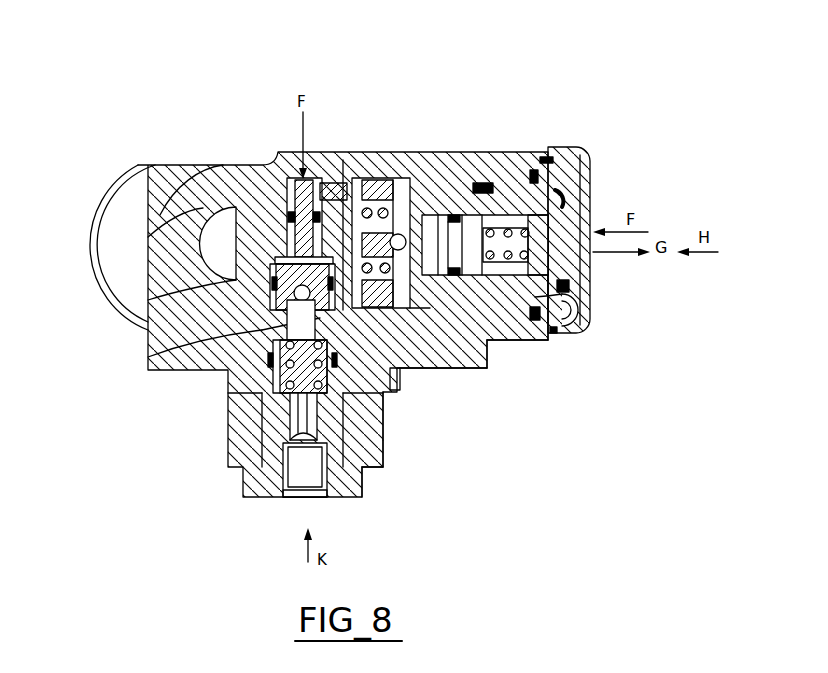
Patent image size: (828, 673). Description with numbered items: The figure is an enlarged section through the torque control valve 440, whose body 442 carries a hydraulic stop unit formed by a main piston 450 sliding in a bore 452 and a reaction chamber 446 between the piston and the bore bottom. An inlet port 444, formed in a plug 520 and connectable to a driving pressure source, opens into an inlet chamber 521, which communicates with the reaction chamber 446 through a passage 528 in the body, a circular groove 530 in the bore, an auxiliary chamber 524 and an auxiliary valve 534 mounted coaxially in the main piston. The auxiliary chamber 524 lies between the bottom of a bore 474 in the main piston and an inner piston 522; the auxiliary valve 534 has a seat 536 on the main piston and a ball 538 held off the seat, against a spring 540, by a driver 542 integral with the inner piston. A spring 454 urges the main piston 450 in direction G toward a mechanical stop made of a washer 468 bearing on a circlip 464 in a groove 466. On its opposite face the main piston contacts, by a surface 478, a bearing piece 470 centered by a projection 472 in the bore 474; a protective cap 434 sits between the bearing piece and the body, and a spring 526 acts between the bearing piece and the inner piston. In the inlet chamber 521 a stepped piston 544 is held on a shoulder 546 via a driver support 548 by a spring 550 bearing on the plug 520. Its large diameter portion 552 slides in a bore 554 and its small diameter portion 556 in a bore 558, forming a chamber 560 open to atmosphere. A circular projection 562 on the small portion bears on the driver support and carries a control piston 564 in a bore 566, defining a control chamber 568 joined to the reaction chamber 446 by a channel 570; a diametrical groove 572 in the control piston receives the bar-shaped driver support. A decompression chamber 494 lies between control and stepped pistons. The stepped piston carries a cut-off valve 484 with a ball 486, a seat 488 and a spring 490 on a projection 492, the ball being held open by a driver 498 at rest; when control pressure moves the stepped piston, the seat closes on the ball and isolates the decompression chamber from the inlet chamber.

The torque control valve 440 is at (338, 110).
The protective cap 434 is at (583, 320).
The body 442 is at (378, 445).
The inlet port 444 is at (312, 480).
The reaction chamber 446 is at (370, 185).
The main piston 450 is at (470, 230).
The bore 452 is at (550, 160).
The spring 454 is at (405, 195).
The circlip 464 is at (560, 340).
The groove 466 is at (558, 330).
The washer 468 is at (577, 323).
The bearing piece 470 is at (580, 220).
The projection 472 is at (580, 160).
The bore 474 is at (537, 268).
The surface 478 is at (575, 195).
The cut-off valve 484 is at (395, 372).
The ball 486 is at (392, 392).
The seat 488 is at (322, 152).
The spring 490 is at (367, 448).
The projection 492 is at (302, 445).
The decompression chamber 494 is at (245, 232).
The driver 498 is at (285, 263).
The plug 520 is at (370, 467).
The inlet chamber 521 is at (245, 462).
The inner piston 522 is at (535, 176).
The auxiliary chamber 524 is at (455, 214).
The spring 526 is at (560, 185).
The passage 528 is at (435, 315).
The circular groove 530 is at (470, 360).
The auxiliary valve 534 is at (478, 186).
The seat 536 is at (430, 330).
The ball 538 is at (415, 320).
The spring 540 is at (445, 185).
The driver 542 is at (478, 342).
The stepped piston 544 is at (262, 365).
The shoulder 546 is at (185, 190).
The driver support 548 is at (190, 188).
The spring 550 is at (265, 468).
The large diameter portion 552 is at (262, 398).
The bore 554 is at (262, 420).
The small diameter portion 556 is at (150, 296).
The bore 558 is at (272, 348).
The chamber 560 is at (150, 357).
The circular projection 562 is at (343, 180).
The control piston 564 is at (275, 190).
The bore 566 is at (245, 190).
The control chamber 568 is at (288, 185).
The channel 570 is at (322, 195).
The diametrical groove 572 is at (248, 185).